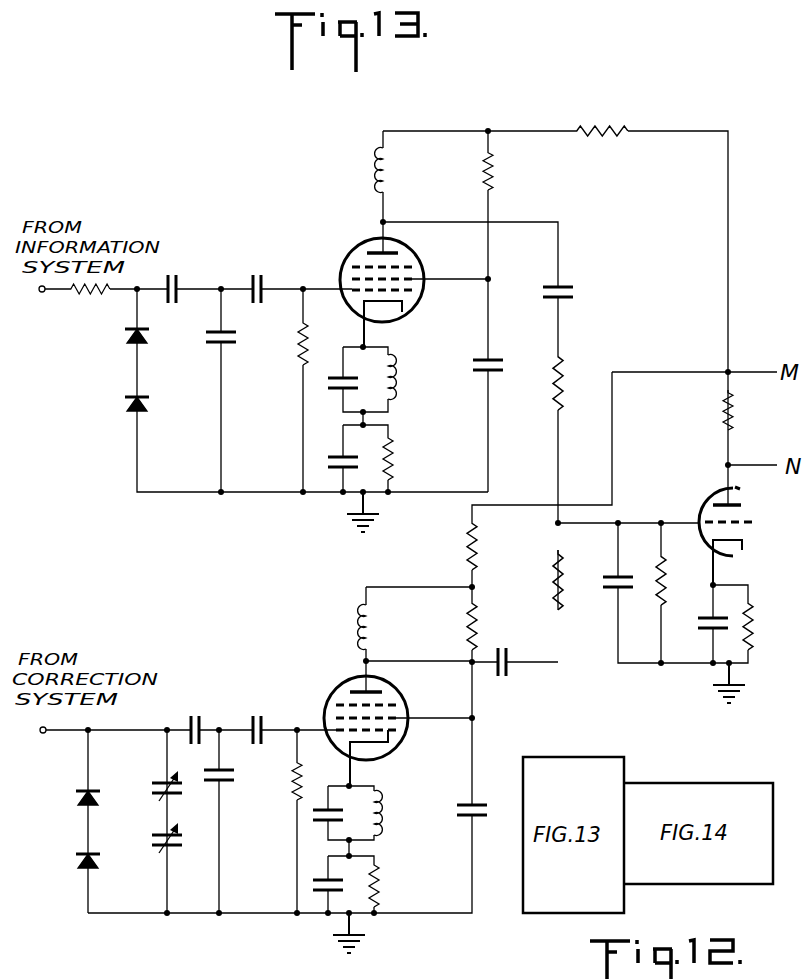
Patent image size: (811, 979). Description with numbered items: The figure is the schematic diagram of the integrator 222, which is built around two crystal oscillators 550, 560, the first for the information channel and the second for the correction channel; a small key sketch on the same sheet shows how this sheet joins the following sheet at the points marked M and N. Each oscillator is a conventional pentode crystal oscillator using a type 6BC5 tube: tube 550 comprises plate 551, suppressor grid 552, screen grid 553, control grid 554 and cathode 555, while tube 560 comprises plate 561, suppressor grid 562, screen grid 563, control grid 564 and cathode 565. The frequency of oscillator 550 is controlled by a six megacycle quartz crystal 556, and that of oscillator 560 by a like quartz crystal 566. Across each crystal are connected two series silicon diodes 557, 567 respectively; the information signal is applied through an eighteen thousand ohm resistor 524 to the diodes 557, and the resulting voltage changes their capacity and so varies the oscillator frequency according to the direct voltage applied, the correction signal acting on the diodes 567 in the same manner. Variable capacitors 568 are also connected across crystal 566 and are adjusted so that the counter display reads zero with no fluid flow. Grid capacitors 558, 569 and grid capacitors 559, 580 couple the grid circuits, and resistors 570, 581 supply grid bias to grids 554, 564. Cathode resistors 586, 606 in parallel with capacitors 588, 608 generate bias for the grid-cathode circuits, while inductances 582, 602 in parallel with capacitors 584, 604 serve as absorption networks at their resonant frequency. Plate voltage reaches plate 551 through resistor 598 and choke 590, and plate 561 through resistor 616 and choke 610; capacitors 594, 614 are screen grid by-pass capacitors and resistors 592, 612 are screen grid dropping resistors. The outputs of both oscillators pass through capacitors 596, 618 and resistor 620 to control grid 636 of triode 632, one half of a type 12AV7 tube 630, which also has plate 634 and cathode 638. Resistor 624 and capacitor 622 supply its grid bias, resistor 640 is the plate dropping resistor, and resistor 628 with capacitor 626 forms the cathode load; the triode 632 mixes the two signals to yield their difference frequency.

The resistor 524 is at (90, 296).
The silicon diodes 557 is at (128, 402).
The quartz crystal 556 is at (207, 343).
The grid capacitor 558 is at (174, 275).
The grid capacitor 559 is at (276, 252).
The resistor 570 is at (300, 340).
The crystal oscillator 550 is at (350, 247).
The plate 551 is at (399, 253).
The suppressor grid 552 is at (412, 267).
The screen grid 553 is at (360, 276).
The control grid 554 is at (358, 298).
The cathode 555 is at (400, 318).
The capacitor 584 is at (338, 384).
The inductance 582 is at (396, 387).
The capacitor 588 is at (328, 463).
The cathode resistor 586 is at (395, 457).
The choke 590 is at (377, 178).
The screen grid dropping resistor 592 is at (494, 166).
The screen grid by-pass capacitor 594 is at (505, 371).
The capacitor 596 is at (575, 295).
The resistor 598 is at (600, 125).
The integrator 222 is at (738, 92).
The plate dropping resistor 640 is at (736, 406).
The 12AV7 tube 630 is at (698, 479).
The triode 632 is at (696, 497).
The plate 634 is at (742, 505).
The control grid 636 is at (751, 526).
The cathode 638 is at (743, 552).
The resistor 628 is at (756, 626).
The capacitor 626 is at (700, 624).
The resistor 624 is at (680, 580).
The capacitor 622 is at (604, 586).
The resistor 620 is at (565, 586).
The resistor 616 is at (480, 551).
The screen grid dropping resistor 612 is at (480, 626).
The capacitor 618 is at (500, 676).
The choke 610 is at (370, 620).
The crystal oscillator 560 is at (350, 680).
The plate 561 is at (352, 692).
The suppressor grid 562 is at (396, 705).
The screen grid 563 is at (340, 718).
The control grid 564 is at (400, 742).
The cathode 565 is at (378, 750).
The grid capacitor 569 is at (207, 705).
The grid capacitor 580 is at (257, 714).
The resistor 581 is at (298, 770).
The quartz crystal 566 is at (232, 780).
The silicon diodes 567 is at (83, 860).
The variable capacitors 568 is at (160, 846).
The capacitor 604 is at (314, 816).
The inductance 602 is at (380, 826).
The capacitor 608 is at (313, 887).
The cathode resistor 606 is at (384, 900).
The screen grid by-pass capacitor 614 is at (488, 812).